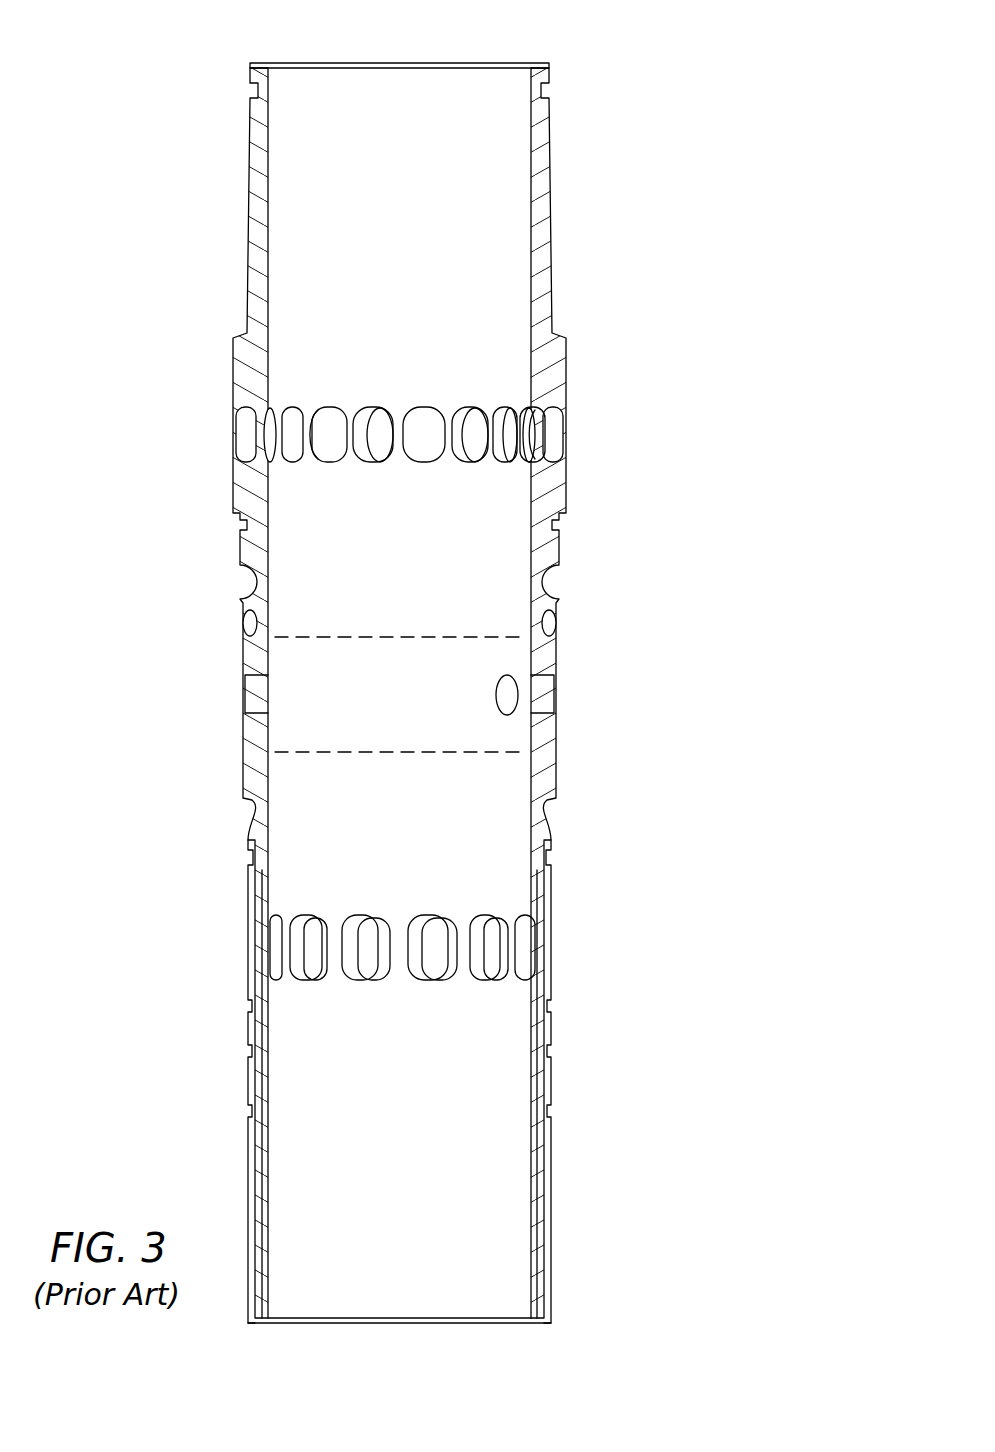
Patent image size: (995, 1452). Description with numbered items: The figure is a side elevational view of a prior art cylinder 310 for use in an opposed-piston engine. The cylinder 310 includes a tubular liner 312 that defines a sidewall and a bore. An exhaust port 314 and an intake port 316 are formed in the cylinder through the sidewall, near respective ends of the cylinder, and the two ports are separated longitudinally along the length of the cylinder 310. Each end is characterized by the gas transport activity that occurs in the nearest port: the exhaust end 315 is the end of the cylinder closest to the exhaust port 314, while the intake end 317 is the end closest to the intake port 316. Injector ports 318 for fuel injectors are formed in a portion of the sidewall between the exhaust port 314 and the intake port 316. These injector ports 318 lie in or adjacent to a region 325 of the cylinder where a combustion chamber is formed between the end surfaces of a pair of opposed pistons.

The cylinder 310 is at (653, 130).
The tubular liner 312 is at (540, 205).
The exhaust port 314 is at (563, 898).
The exhaust end 315 is at (473, 1323).
The intake port 316 is at (580, 383).
The intake end 317 is at (325, 57).
The injector port 318 is at (257, 693).
The combustion chamber region 325 is at (405, 707).